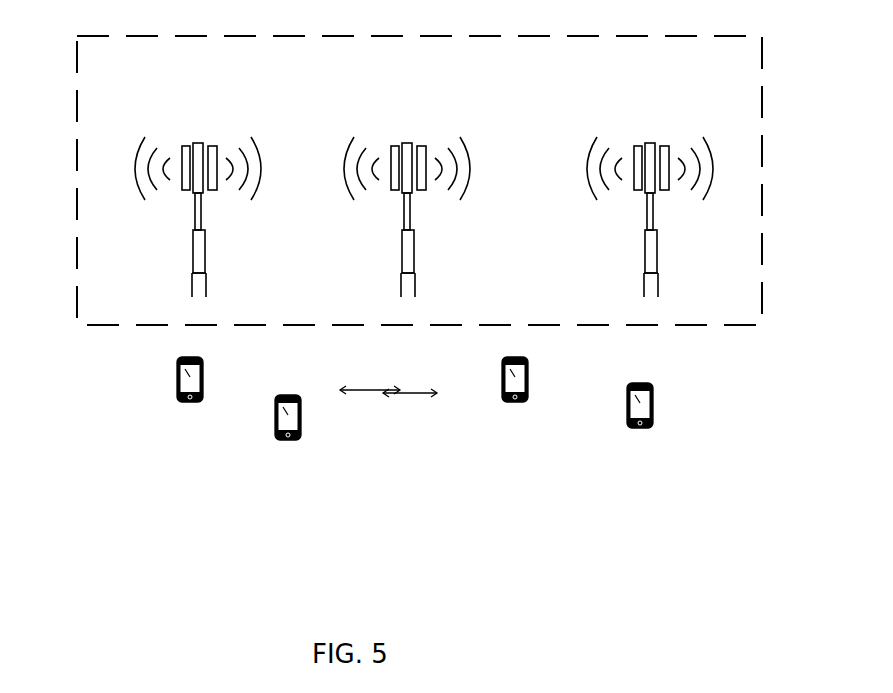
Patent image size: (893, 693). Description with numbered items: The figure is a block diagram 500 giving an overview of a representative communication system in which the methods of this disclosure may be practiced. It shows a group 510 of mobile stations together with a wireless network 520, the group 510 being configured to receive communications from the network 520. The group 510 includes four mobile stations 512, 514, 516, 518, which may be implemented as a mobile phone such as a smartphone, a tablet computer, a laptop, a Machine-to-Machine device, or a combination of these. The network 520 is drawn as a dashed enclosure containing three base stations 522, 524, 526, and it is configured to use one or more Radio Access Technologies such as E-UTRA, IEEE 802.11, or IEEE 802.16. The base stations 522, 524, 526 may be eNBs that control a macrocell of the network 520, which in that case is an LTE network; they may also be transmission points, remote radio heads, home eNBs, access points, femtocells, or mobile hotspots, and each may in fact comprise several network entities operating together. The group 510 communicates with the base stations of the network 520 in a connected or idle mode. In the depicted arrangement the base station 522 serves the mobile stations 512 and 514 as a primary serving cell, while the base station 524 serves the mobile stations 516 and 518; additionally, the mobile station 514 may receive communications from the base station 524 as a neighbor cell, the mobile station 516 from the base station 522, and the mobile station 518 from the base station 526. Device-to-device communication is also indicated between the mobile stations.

The block diagram 500 is at (573, 644).
The group of mobile stations 510 is at (113, 398).
The mobile station 512 is at (178, 398).
The mobile station 514 is at (277, 437).
The mobile station 516 is at (503, 403).
The mobile station 518 is at (633, 428).
The wireless network 520 is at (640, 327).
The base station 522 is at (203, 127).
The base station 524 is at (391, 129).
The base station 526 is at (633, 129).